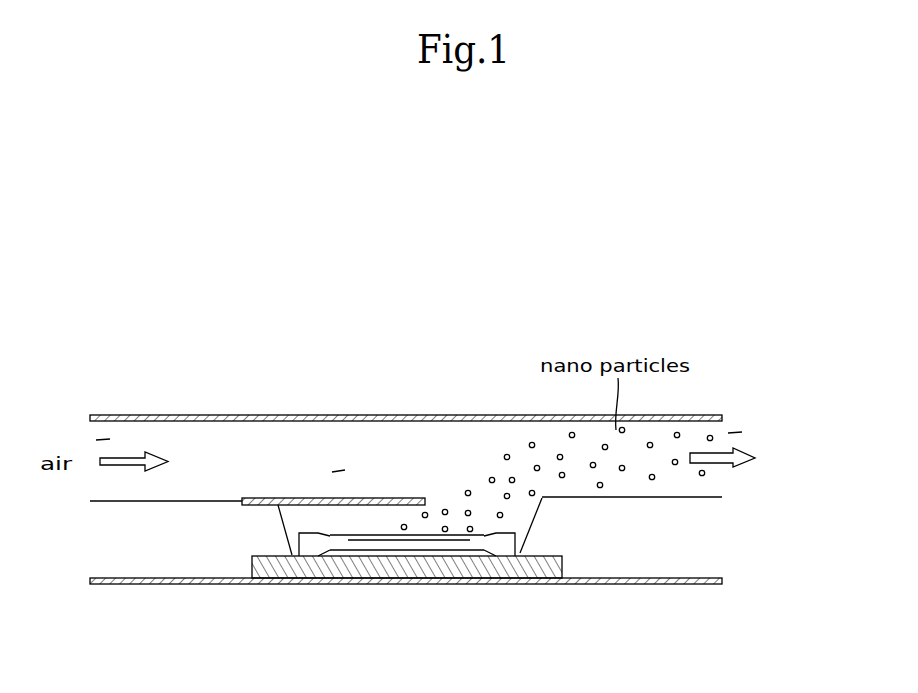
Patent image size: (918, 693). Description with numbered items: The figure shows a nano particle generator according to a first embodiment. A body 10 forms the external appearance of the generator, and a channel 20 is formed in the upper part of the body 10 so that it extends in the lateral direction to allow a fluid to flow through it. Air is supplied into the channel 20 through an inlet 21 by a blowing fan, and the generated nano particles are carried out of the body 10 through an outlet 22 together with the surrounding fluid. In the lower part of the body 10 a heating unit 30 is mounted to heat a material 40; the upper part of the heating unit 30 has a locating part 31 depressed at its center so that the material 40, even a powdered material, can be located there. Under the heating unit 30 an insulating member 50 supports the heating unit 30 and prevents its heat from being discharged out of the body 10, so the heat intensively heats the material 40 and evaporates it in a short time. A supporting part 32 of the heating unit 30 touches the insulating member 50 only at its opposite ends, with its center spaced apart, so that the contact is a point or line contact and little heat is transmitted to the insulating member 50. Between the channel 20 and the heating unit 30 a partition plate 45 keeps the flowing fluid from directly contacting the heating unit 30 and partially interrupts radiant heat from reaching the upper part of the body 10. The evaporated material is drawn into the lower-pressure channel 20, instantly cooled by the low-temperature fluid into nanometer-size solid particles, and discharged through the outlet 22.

The body 10 is at (194, 415).
The channel 20 is at (337, 470).
The inlet 21 is at (101, 438).
The outlet 22 is at (733, 431).
The heating unit 30 is at (439, 589).
The locating part 31 is at (473, 538).
The supporting part 32 is at (310, 546).
The material 40 is at (370, 538).
The partition plate 45 is at (408, 498).
The insulating member 50 is at (443, 572).